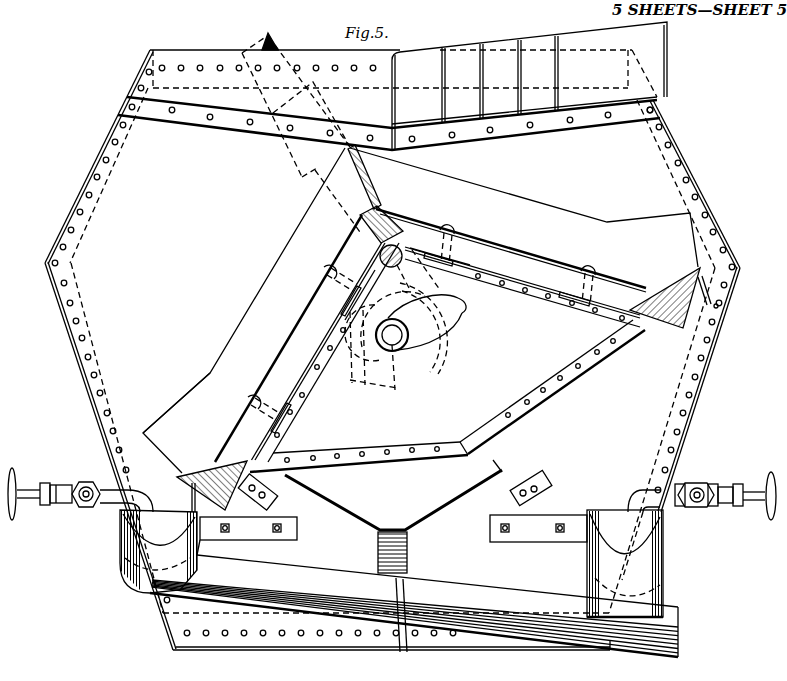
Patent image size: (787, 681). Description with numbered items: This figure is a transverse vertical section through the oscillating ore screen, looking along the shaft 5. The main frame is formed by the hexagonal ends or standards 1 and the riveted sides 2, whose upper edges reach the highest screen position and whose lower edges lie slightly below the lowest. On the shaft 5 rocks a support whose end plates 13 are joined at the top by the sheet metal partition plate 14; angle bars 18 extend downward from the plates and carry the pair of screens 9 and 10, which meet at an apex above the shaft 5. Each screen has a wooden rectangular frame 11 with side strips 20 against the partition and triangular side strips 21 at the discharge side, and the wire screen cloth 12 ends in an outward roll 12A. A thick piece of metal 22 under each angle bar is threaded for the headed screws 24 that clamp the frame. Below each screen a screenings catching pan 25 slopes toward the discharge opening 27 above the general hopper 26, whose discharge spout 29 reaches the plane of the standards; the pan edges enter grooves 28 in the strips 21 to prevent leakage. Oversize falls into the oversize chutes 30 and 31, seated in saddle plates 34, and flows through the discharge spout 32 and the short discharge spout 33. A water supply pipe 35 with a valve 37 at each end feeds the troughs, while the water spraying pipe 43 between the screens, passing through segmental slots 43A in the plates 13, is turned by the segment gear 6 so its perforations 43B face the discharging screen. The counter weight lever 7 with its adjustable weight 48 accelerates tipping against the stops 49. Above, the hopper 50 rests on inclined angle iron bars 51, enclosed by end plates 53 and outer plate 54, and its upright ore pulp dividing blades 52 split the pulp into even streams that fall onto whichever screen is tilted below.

The ends or standards 1 is at (336, 158).
The sides 2 is at (80, 371).
The shaft 5 is at (410, 268).
The segment gear 6 is at (458, 362).
The counter weight lever 7 is at (255, 46).
The screen 9 is at (181, 365).
The screen 10 is at (524, 207).
The rectangular frame 11 is at (508, 260).
The wire screen cloth 12 is at (556, 262).
The outward curve or roll 12A is at (160, 473).
The end plates 13 is at (293, 253).
The sheet metal partition plate 14 is at (372, 180).
The angle bars 18 is at (525, 296).
The side strips 20 is at (400, 222).
The side strips 21 is at (665, 318).
The thick piece of metal 22 is at (580, 312).
The headed screws 24 is at (455, 230).
The screenings catching pan 25 is at (570, 373).
The general hopper 26 is at (393, 500).
The discharge opening 27 is at (485, 454).
The grooves 28 is at (638, 320).
The discharge spout 29 is at (408, 558).
The oversize chute 30 is at (125, 577).
The oversize chute 31 is at (665, 542).
The discharge spout 32 is at (414, 606).
The short discharge spout 33 is at (667, 594).
The saddle plates 34 is at (298, 529).
The water supply pipe 35 is at (84, 508).
The valve 37 is at (67, 484).
The water spraying pipe 43 is at (393, 364).
The segmental slots 43A is at (470, 328).
The perforations 43B is at (387, 351).
The vertically adjustable weight 48 is at (282, 157).
The stops 49 is at (273, 490).
The hopper 50 is at (546, 86).
The angle iron bars 51 is at (192, 112).
The ore pulp dividing blades 52 is at (432, 98).
The end plates 53 is at (585, 42).
The plate 54 is at (668, 45).